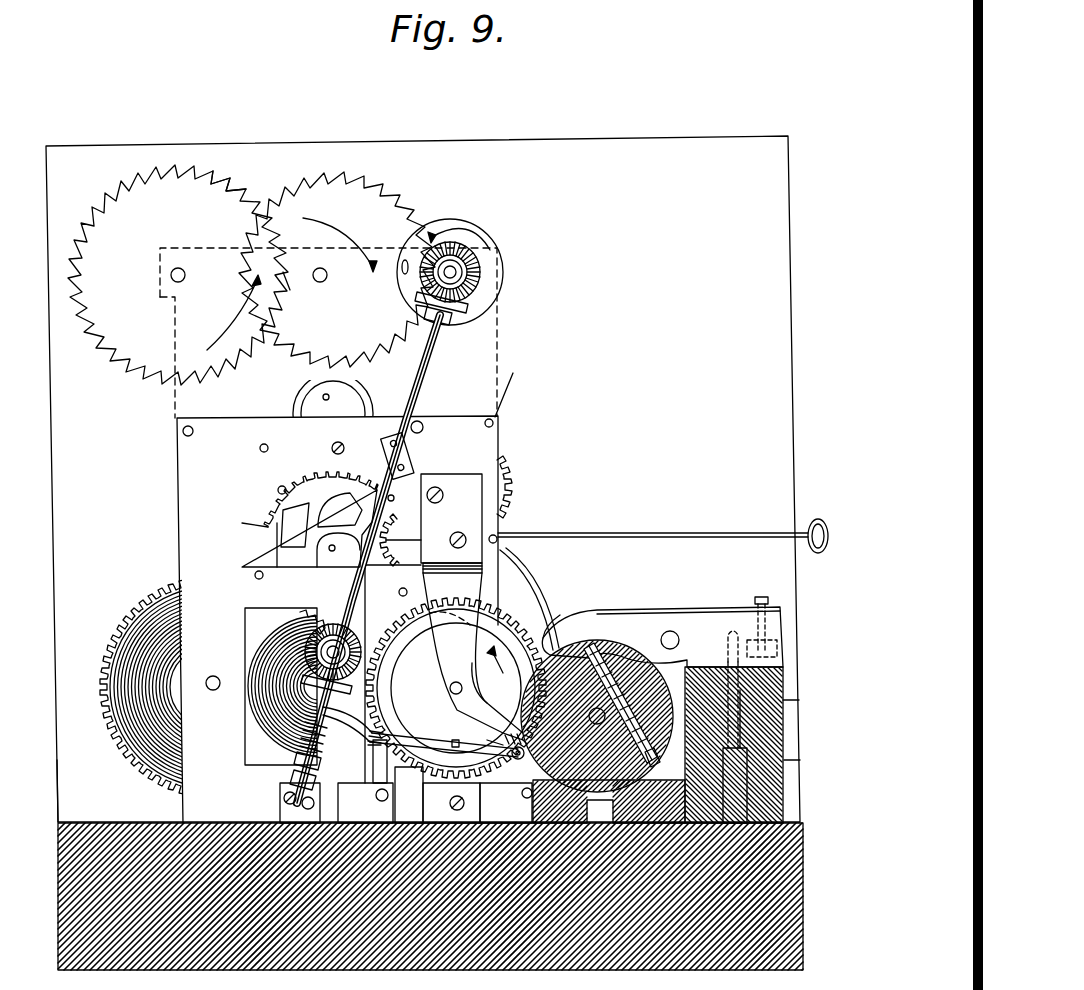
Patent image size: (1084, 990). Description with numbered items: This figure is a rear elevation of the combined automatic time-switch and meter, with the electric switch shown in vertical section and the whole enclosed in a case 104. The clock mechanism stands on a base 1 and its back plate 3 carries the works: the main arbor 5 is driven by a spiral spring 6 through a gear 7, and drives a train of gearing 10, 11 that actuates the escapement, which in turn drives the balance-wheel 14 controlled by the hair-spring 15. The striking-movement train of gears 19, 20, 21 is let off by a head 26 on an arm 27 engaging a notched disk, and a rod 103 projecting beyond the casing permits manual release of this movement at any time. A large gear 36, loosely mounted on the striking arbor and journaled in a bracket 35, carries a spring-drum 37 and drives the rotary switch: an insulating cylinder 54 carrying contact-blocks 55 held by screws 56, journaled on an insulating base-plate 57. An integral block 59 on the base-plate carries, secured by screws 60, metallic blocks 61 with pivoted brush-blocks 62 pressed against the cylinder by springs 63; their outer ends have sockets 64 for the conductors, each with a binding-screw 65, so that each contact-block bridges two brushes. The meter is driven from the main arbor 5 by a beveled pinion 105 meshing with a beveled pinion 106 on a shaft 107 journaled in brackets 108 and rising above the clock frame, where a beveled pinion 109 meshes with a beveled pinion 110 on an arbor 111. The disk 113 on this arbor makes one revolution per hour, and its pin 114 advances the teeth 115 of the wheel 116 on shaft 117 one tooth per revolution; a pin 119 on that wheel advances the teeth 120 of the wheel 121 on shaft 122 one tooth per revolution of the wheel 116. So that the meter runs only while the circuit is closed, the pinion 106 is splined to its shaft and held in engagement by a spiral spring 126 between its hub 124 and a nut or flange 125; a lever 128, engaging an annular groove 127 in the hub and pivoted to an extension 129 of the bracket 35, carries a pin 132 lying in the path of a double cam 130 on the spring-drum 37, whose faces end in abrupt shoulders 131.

The base 1 is at (110, 819).
The back plate 3 is at (346, 535).
The main or hand-carrying arbor 5 is at (342, 626).
The spiral spring 6 is at (180, 656).
The gear 7 is at (177, 582).
The train of gearing 10 is at (256, 551).
The train of gearing 11 is at (288, 508).
The balance-wheel 14 is at (311, 404).
The hair-spring 15 is at (356, 404).
The gear 19 is at (412, 535).
The gear 20 is at (395, 498).
The gear 21 is at (513, 484).
The head 26 is at (560, 652).
The arm 27 is at (507, 556).
The bracket 35 is at (464, 595).
The large gear 36 is at (506, 618).
The spring-drum 37 is at (540, 622).
The cylinder 54 is at (660, 697).
The contact-blocks 55 is at (622, 656).
The screws 56 is at (656, 762).
The insulating base-plate 57 is at (720, 830).
The block 59 is at (800, 772).
The screws 60 is at (748, 703).
The metallic blocks 61 is at (686, 643).
The brush-blocks 62 is at (612, 652).
The springs 63 is at (654, 618).
The sockets 64 is at (742, 648).
The binding-screw 65 is at (762, 617).
The rod 103 is at (680, 534).
The case 104 is at (423, 479).
The beveled pinion 105 is at (322, 618).
The beveled pinion 106 is at (347, 720).
The shaft 107 is at (415, 401).
The brackets 108 is at (388, 446).
The beveled pinion 109 is at (461, 312).
The beveled pinion 110 is at (481, 269).
The arbor 111 is at (466, 258).
The disk 113 is at (457, 217).
The pin 114 is at (407, 258).
The teeth 115 is at (340, 172).
The disk or wheel 116 is at (277, 312).
The shaft 117 is at (327, 275).
The pin 119 is at (301, 289).
The teeth 120 is at (222, 174).
The disk or wheel 121 is at (178, 275).
The shaft 122 is at (186, 279).
The hub 124 is at (318, 710).
The nut or flange 125 is at (319, 768).
The spiral spring 126 is at (255, 770).
The annular groove 127 is at (322, 742).
The lever 128 is at (446, 744).
The extension 129 is at (466, 692).
The double cam 130 is at (456, 688).
The abrupt shoulders 131 is at (456, 622).
The pin 132 is at (453, 743).